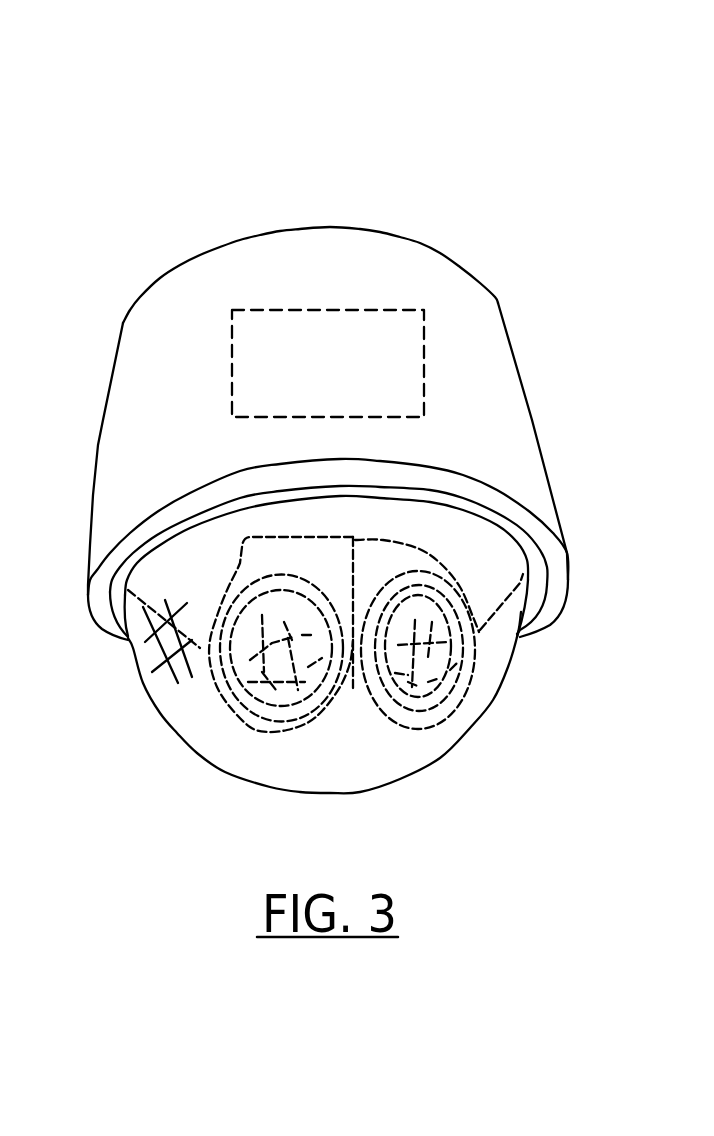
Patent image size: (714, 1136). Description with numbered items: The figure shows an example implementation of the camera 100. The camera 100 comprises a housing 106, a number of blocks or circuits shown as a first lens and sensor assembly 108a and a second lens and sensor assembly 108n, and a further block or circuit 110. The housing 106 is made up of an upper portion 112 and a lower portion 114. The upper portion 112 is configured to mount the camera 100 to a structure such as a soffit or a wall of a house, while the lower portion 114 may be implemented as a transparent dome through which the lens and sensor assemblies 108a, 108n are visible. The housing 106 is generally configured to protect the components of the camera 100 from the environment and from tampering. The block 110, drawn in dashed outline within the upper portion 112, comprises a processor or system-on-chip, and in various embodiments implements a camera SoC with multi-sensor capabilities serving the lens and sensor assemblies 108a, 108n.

The camera 100 is at (287, 60).
The housing 106 is at (110, 394).
The first lens and sensor assembly 108a is at (267, 730).
The second lens and sensor assembly 108n is at (421, 725).
The block (or circuit) 110 is at (350, 375).
The upper portion 112 is at (532, 420).
The lower portion 114 is at (507, 667).